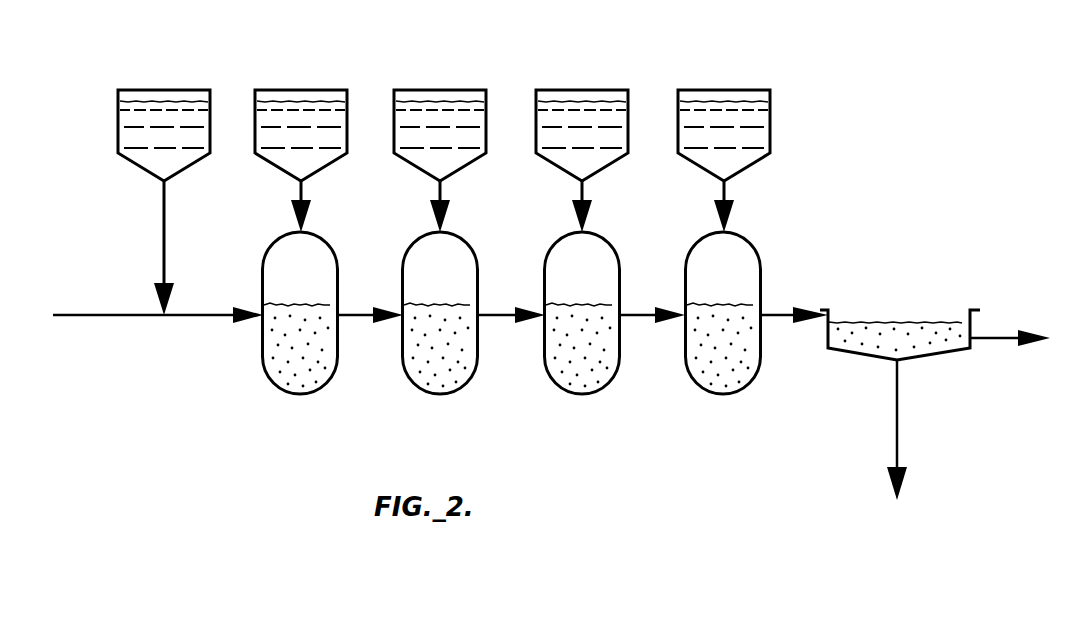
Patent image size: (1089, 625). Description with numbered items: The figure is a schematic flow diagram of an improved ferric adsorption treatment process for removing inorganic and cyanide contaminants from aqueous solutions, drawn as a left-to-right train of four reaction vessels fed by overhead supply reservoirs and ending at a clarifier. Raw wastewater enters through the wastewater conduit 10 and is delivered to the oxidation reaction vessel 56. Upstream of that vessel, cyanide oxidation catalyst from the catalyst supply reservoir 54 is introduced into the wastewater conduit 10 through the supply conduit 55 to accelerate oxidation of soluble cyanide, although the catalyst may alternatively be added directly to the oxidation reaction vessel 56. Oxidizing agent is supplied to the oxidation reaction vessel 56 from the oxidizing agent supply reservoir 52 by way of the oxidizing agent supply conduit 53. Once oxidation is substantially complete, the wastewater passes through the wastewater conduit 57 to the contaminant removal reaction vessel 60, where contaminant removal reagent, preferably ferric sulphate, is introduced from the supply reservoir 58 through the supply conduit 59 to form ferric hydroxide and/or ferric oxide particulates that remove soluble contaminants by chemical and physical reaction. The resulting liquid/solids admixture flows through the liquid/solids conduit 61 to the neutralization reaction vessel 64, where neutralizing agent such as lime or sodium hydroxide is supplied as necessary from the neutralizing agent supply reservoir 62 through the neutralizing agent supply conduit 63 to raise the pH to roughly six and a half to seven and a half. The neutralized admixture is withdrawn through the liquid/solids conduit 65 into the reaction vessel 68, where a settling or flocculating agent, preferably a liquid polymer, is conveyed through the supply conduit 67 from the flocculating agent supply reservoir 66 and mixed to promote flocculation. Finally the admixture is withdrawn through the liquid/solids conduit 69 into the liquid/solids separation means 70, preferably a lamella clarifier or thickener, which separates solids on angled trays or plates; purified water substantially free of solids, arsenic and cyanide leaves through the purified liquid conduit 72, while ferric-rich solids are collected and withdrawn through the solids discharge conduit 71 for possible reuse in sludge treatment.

The wastewater conduit 10 is at (108, 313).
The oxidizing agent supply reservoir 52 is at (306, 92).
The oxidizing agent supply conduit 53 is at (305, 192).
The catalyst supply reservoir 54 is at (172, 92).
The supply conduit 55 is at (166, 208).
The oxidation reaction vessel 56 is at (322, 237).
The wastewater conduit 57 is at (345, 318).
The supply reservoir 58 is at (452, 93).
The supply conduit 59 is at (444, 193).
The contaminant removal reaction vessel 60 is at (462, 237).
The liquid/solids conduit 61 is at (483, 318).
The neutralizing agent supply reservoir 62 is at (594, 93).
The neutralizing agent supply conduit 63 is at (586, 193).
The neutralization reaction vessel 64 is at (604, 237).
The liquid/solids conduit 65 is at (627, 318).
The flocculating agent supply reservoir 66 is at (733, 92).
The supply conduit 67 is at (728, 193).
The reaction vessel 68 is at (745, 237).
The liquid/solids conduit 69 is at (773, 320).
The liquid/solids separation means 70 is at (930, 355).
The solids discharge conduit 71 is at (898, 447).
The purified liquid conduit 72 is at (990, 338).